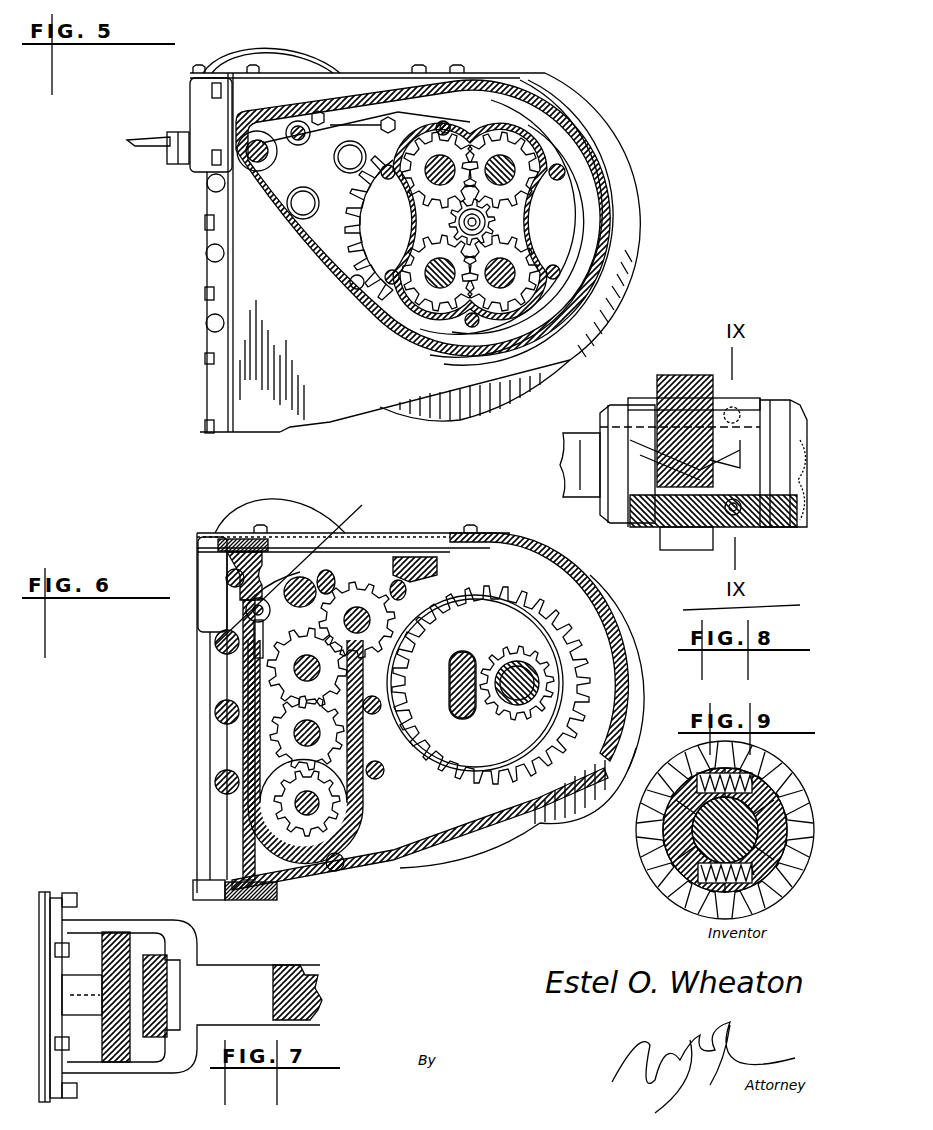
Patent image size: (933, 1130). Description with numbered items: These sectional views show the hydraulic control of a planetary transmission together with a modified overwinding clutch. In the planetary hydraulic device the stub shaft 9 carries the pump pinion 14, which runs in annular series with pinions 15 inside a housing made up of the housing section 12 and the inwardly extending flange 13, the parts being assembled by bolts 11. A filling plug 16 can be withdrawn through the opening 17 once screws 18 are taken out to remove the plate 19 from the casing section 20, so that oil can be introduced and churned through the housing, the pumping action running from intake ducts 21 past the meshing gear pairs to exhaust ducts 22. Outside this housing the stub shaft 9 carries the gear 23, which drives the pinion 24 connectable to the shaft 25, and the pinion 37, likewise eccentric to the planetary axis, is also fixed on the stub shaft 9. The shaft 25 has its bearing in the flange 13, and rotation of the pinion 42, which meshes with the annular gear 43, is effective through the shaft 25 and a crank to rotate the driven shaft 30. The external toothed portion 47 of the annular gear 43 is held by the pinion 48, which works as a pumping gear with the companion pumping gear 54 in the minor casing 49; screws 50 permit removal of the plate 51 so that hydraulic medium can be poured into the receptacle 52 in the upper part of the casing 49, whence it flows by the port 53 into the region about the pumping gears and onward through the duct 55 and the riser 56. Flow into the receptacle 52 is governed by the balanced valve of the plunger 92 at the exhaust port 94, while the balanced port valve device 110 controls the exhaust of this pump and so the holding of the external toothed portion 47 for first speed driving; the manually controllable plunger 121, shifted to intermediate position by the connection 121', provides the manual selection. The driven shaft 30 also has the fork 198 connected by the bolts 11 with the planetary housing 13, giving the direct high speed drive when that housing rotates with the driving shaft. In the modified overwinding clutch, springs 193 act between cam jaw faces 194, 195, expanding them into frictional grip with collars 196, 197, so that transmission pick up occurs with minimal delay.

In FIG. 5, the stub shaft 9 is at (362, 282).
In FIG. 7, the stub shaft 9 is at (85, 982).
In FIG. 5, the bolts 11 is at (470, 140).
In FIG. 7, the bolts 11 is at (70, 900).
In FIG. 5, the housing section 12 is at (530, 155).
In FIG. 7, the inwardly extending flange 13 is at (48, 894).
In FIG. 5, the pump pinion 14 is at (345, 250).
In FIG. 5, the pinions 15 is at (420, 150).
In FIG. 5, the filling plug 16 is at (445, 133).
In FIG. 5, the opening 17 is at (412, 122).
In FIG. 5, the screws 18 is at (457, 66).
In FIG. 5, the plate 19 is at (418, 66).
In FIG. 5, the casing section 20 is at (528, 358).
In FIG. 5, the intake ducts 21 is at (500, 320).
In FIG. 5, the exhaust ducts 22 is at (605, 170).
In FIG. 7, the gear 23 is at (135, 945).
In FIG. 8, the pinion 24 is at (697, 380).
In FIG. 9, the pinion 24 is at (668, 885).
In FIG. 6, the shaft 25 is at (535, 685).
In FIG. 8, the shaft 25 is at (568, 460).
In FIG. 9, the shaft 25 is at (768, 888).
In FIG. 6, the driven shaft 30 is at (452, 695).
In FIG. 7, the driven shaft 30 is at (276, 970).
In FIG. 7, the pinion 37 is at (160, 965).
In FIG. 6, the pinion 42 is at (490, 658).
In FIG. 6, the annular gear 43 is at (490, 754).
In FIG. 6, the external toothed portion 47 is at (505, 785).
In FIG. 6, the pinion 48 is at (357, 608).
In FIG. 6, the minor casing 49 is at (240, 672).
In FIG. 6, the screws 50 is at (265, 528).
In FIG. 6, the plate 51 is at (424, 533).
In FIG. 6, the receptacle 52 is at (296, 567).
In FIG. 6, the port 53 is at (246, 606).
In FIG. 6, the companion pumping gear 54 is at (245, 688).
In FIG. 6, the duct 55 is at (360, 776).
In FIG. 6, the riser 56 is at (216, 814).
In FIG. 6, the plunger 92 is at (362, 578).
In FIG. 5, the exhaust port 94 is at (300, 146).
In FIG. 6, the exhaust port 94 is at (272, 569).
In FIG. 5, the balanced port valve device 110 is at (258, 173).
In FIG. 6, the balanced port valve device 110 is at (232, 620).
In FIG. 5, the manually controllable plunger 121 is at (150, 154).
In FIG. 5, the connection 121' is at (141, 127).
In FIG. 8, the springs 193 is at (738, 410).
In FIG. 9, the springs 193 is at (690, 875).
In FIG. 9, the cam jaw face 194 is at (770, 790).
In FIG. 9, the cam jaw face 195 is at (690, 770).
In FIG. 8, the collar 196 is at (766, 528).
In FIG. 8, the collar 197 is at (642, 528).
In FIG. 7, the fork 198 is at (133, 925).